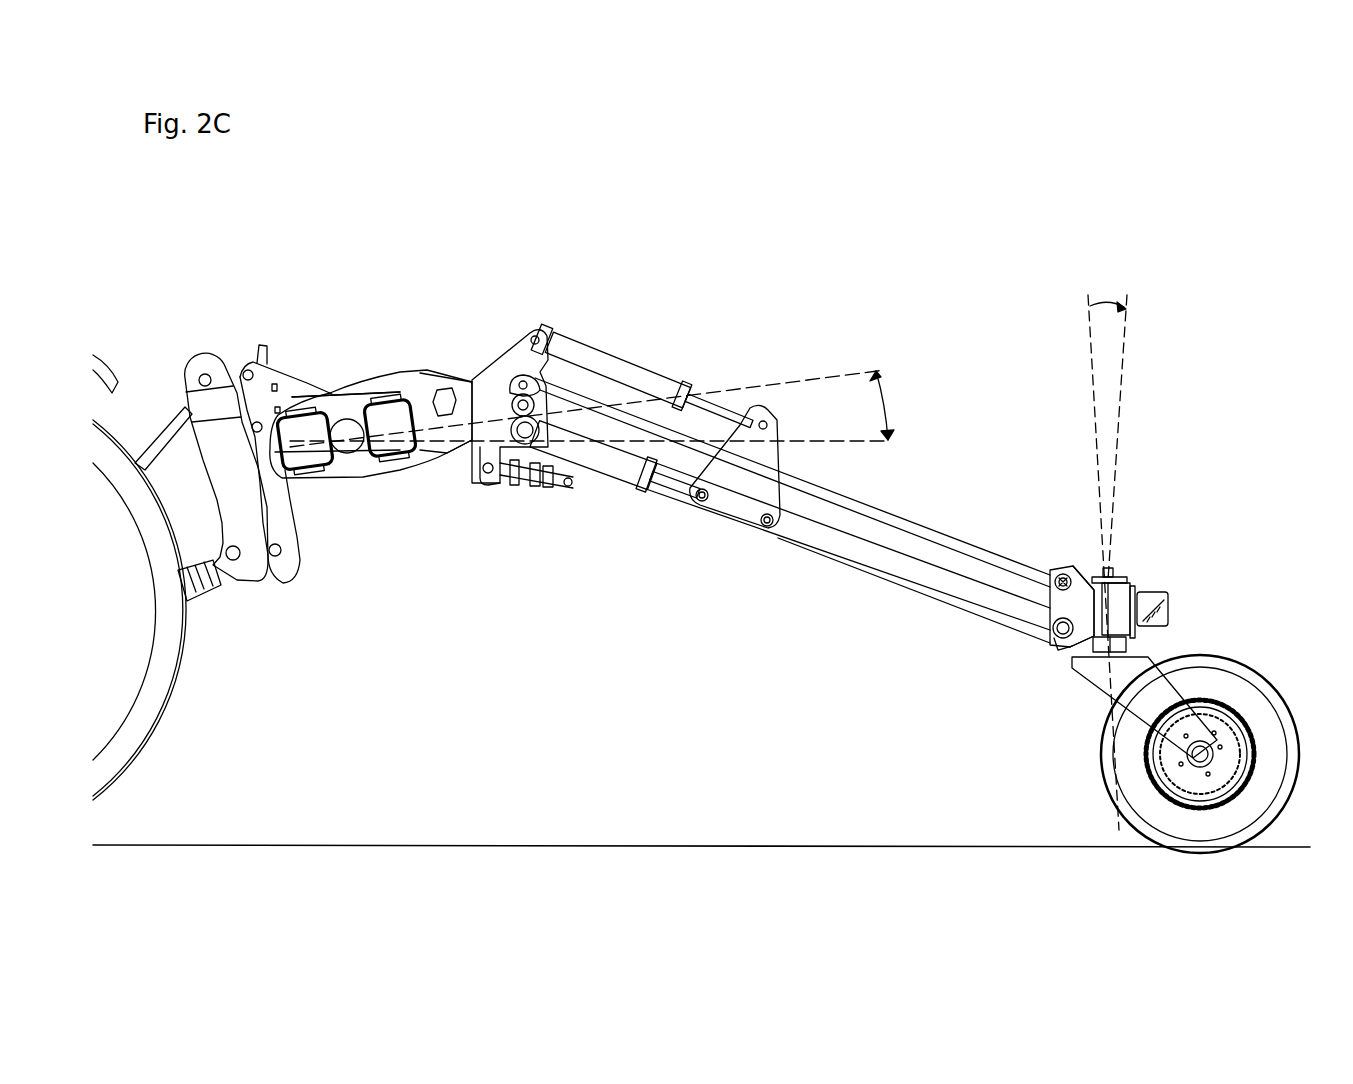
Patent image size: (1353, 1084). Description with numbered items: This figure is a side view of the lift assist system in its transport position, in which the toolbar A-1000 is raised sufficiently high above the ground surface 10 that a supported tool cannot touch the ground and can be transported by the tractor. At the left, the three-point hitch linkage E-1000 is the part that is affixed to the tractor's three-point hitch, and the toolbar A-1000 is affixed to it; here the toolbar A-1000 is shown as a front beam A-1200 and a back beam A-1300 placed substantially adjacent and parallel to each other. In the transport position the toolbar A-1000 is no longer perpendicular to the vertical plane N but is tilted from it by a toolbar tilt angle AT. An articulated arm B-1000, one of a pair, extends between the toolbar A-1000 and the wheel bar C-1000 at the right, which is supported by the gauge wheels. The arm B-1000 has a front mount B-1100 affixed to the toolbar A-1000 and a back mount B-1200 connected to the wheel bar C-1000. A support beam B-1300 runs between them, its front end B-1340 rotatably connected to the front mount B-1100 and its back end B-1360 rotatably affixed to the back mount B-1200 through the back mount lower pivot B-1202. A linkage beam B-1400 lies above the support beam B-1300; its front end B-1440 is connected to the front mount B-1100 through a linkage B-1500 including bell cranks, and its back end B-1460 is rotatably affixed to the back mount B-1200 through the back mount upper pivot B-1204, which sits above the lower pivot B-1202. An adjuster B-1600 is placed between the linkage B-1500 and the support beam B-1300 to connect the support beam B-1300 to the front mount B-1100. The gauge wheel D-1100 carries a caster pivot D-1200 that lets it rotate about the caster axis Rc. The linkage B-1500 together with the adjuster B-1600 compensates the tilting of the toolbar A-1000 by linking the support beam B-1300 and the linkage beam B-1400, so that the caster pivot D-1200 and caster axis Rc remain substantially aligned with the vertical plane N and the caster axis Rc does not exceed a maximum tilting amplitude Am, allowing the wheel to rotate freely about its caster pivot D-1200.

The ground surface 10 is at (727, 881).
The three-point hitch linkage E-1000 is at (234, 347).
The toolbar A-1000 is at (369, 495).
The front beam A-1200 is at (308, 466).
The back beam A-1300 is at (420, 460).
The articulated arm B-1000 is at (693, 499).
The front mount B-1100 is at (455, 378).
The back mount B-1200 is at (995, 595).
The back mount lower pivot B-1202 is at (1062, 644).
The back mount upper pivot B-1204 is at (1050, 572).
The support beam B-1300 is at (807, 550).
The front end of the support beam B-1340 is at (630, 490).
The back end of the support beam B-1360 is at (1050, 642).
The linkage beam B-1400 is at (935, 543).
The front end of the linkage beam B-1440 is at (548, 348).
The back end of the linkage beam B-1460 is at (1050, 574).
The linkage B-1500 is at (410, 455).
The adjuster B-1600 is at (568, 487).
The wheel bar C-1000 is at (1165, 592).
The castor wheel D-1100 is at (1190, 657).
The caster pivot D-1200 is at (1113, 567).
The vertical plane N is at (1088, 558).
The maximum tilting amplitude Am is at (1108, 292).
The caster axis Rc is at (1131, 437).
The toolbar tilt angle AT is at (895, 405).